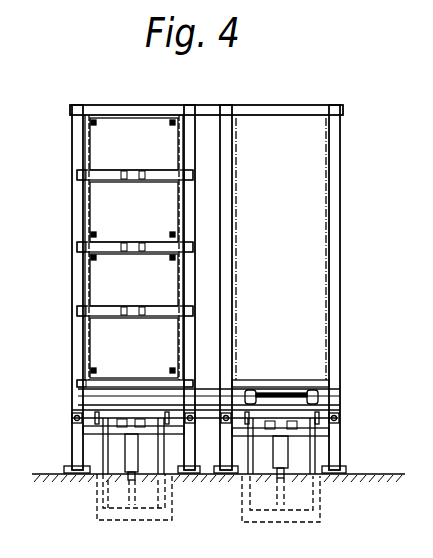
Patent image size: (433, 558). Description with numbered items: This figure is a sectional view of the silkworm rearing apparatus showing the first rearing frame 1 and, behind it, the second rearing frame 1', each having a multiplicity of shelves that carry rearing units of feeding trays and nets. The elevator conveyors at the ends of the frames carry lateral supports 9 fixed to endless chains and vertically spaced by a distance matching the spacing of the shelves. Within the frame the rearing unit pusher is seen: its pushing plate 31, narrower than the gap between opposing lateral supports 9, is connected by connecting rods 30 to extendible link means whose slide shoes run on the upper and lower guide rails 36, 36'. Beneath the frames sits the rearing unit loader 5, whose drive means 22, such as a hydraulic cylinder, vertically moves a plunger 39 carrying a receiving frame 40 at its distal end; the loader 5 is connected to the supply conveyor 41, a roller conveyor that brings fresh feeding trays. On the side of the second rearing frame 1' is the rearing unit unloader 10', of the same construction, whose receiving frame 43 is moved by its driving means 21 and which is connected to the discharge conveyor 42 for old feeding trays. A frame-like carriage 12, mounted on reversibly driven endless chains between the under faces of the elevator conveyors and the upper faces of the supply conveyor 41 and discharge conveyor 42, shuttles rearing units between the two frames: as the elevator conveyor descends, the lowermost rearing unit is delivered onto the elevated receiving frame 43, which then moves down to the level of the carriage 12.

The silkworm rearing frame 1 is at (136, 268).
The second rearing frame 1' is at (277, 268).
The rearing unit loader 5 is at (100, 458).
The lateral supports 9 is at (233, 122).
The rearing unit unloader 10' is at (353, 456).
The carriage 12 is at (307, 391).
The driving means 21 is at (286, 452).
The drive means 22 is at (137, 452).
The connecting rods 30 is at (94, 124).
The pushing plate 31 is at (136, 125).
The upper guide rail 36 is at (145, 179).
The lower guide rail 36' is at (133, 217).
The plunger 39 is at (135, 508).
The receiving frame 40 is at (164, 464).
The supply conveyor 41 is at (88, 416).
The discharge conveyor 42 is at (322, 418).
The receiving frame 43 is at (316, 457).